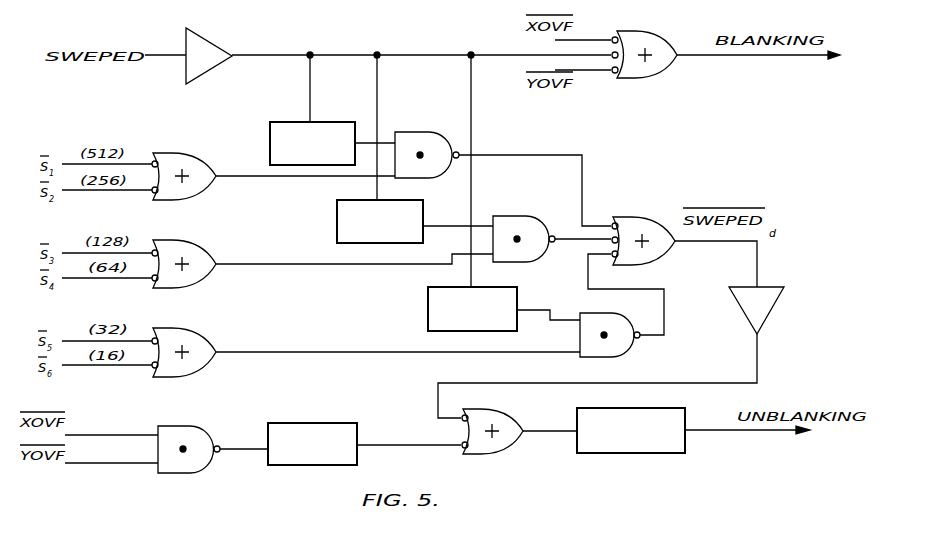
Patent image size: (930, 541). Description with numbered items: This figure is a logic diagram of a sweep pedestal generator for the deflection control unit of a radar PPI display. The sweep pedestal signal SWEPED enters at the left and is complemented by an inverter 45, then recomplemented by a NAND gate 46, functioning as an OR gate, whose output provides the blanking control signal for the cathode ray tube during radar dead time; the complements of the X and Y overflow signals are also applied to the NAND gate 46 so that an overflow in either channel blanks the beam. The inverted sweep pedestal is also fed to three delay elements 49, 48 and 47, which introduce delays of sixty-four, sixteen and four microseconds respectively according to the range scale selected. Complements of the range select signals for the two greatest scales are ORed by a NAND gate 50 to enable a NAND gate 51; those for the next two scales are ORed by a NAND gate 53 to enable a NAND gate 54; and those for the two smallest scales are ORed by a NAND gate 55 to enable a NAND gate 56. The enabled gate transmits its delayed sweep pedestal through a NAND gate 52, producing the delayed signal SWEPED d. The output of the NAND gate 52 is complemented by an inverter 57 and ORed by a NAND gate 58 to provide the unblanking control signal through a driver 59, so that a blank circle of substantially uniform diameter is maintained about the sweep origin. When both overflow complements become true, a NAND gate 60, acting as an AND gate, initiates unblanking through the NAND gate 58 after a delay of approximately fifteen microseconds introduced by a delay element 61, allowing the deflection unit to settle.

The inverter 45 is at (218, 51).
The NAND gate 46 is at (657, 35).
The delay element 47 is at (515, 301).
The delay element 48 is at (337, 216).
The delay element 49 is at (331, 126).
The NAND gate 50 is at (197, 159).
The NAND gate 51 is at (432, 135).
The NAND gate 52 is at (650, 220).
The NAND gate 53 is at (200, 251).
The NAND gate 54 is at (527, 221).
The NAND gate 55 is at (200, 336).
The NAND gate 56 is at (623, 346).
The inverter 57 is at (760, 313).
The NAND gate 58 is at (495, 451).
The driver 59 is at (633, 446).
The NAND gate 60 is at (198, 432).
The delay element 61 is at (345, 426).